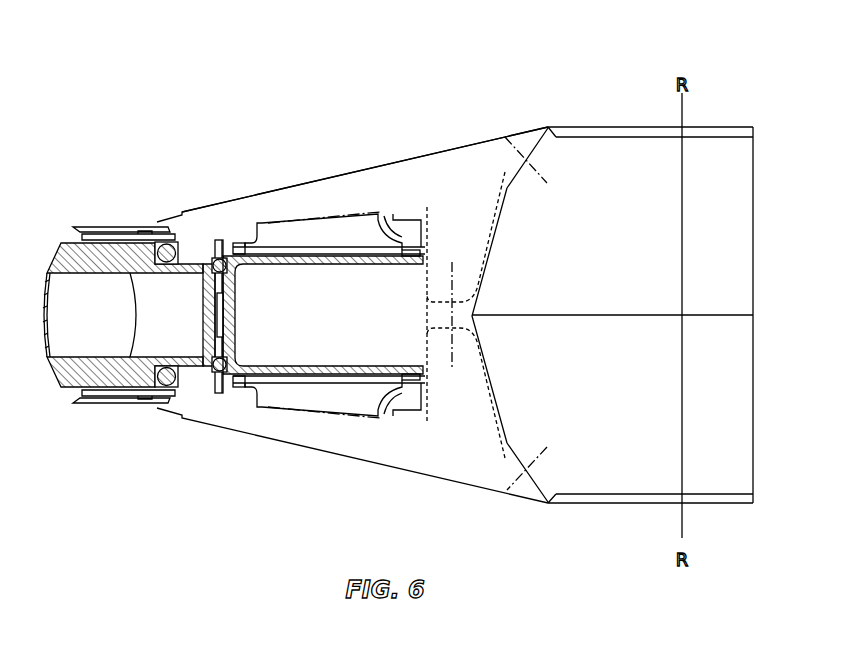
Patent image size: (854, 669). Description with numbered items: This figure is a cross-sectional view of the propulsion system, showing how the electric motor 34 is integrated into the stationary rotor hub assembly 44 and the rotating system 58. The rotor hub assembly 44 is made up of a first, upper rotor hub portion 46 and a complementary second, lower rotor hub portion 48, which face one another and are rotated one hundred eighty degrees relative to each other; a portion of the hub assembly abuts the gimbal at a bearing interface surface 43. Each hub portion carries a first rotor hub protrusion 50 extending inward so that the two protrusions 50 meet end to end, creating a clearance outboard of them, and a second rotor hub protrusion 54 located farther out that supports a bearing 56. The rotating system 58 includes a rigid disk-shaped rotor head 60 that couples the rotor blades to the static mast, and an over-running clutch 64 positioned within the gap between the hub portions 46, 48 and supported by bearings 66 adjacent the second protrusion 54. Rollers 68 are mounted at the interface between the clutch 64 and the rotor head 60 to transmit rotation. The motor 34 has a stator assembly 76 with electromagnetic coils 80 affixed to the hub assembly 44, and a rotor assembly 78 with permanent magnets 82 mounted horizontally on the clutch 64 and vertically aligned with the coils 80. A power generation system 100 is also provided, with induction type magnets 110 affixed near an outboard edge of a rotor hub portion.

The electric motor 34 is at (316, 212).
The bearing interface surface 43 is at (543, 147).
The rotor hub assembly 44 is at (429, 147).
The first rotor hub portion 46 is at (467, 160).
The second rotor hub portion 48 is at (397, 460).
The first rotor hub protrusion 50 is at (460, 268).
The second rotor hub protrusion 54 is at (197, 253).
The bearing 56 is at (170, 240).
The rotating system 58 is at (225, 401).
The rotor head 60 is at (100, 250).
The over-running clutch 64 is at (355, 283).
The bearings 66 is at (218, 241).
The rollers 68 is at (217, 313).
The stator assembly 76 is at (365, 137).
The rotor assembly 78 is at (352, 165).
The electromagnetic coil 80 is at (272, 238).
The permanent magnets 82 is at (323, 383).
The power generation system 100 is at (92, 407).
The induction type magnets 110 is at (123, 236).